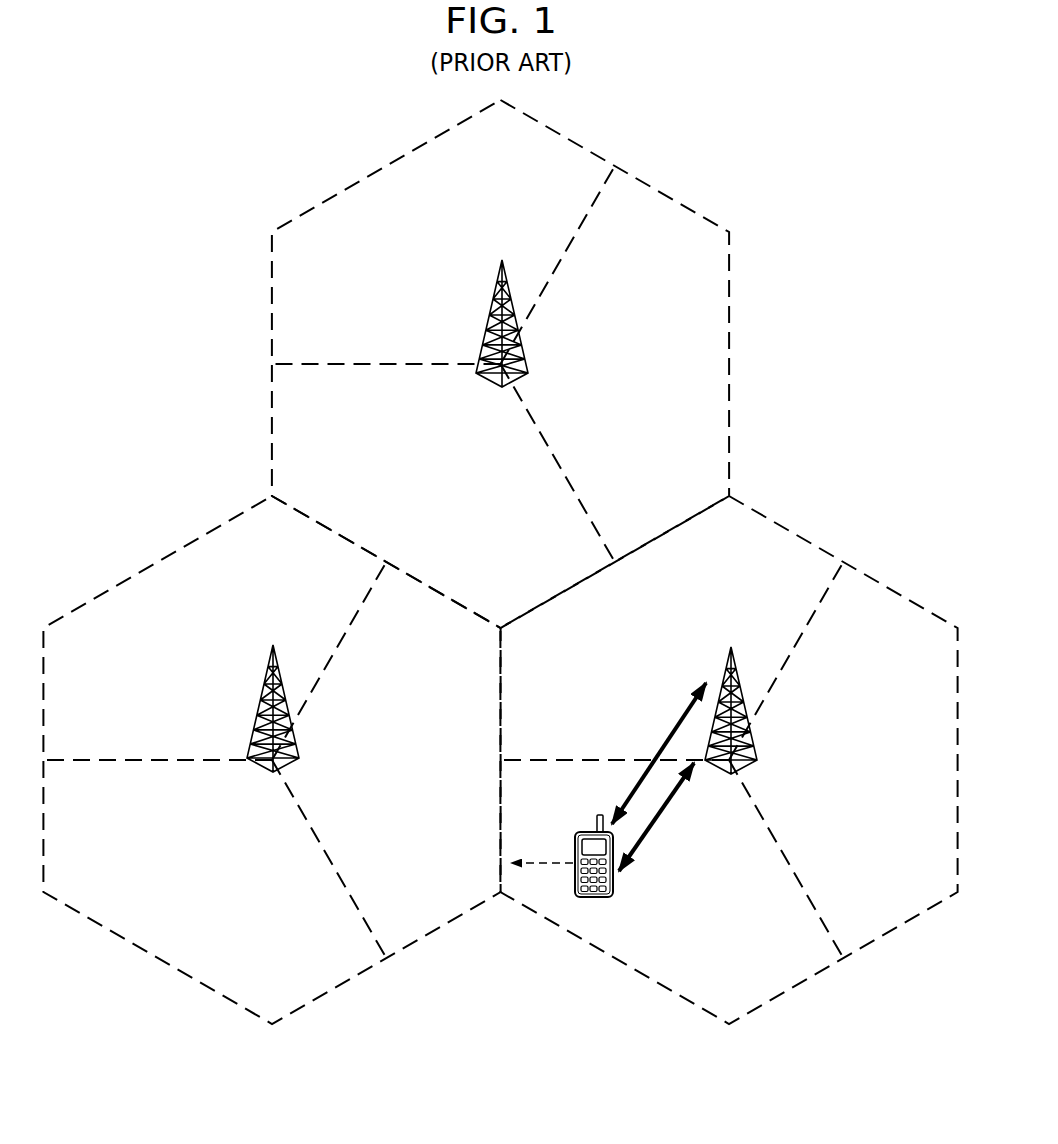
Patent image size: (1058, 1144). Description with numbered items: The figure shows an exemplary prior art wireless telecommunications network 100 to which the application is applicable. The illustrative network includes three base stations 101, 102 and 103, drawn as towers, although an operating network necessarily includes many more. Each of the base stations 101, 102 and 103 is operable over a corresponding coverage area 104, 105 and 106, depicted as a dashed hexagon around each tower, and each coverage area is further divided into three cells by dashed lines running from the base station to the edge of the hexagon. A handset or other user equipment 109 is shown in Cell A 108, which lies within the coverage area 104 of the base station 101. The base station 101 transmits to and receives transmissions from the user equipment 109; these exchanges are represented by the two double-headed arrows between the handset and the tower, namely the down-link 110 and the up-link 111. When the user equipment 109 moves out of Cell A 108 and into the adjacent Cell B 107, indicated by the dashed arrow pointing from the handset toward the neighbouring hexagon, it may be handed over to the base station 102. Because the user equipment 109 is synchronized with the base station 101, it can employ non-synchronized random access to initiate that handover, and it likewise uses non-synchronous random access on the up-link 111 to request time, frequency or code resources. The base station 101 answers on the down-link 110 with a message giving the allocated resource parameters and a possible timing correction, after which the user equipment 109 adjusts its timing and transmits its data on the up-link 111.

The wireless telecommunications network 100 is at (280, 115).
The base station 101 is at (755, 746).
The base station 102 is at (259, 710).
The base station 103 is at (487, 322).
The coverage area 104 is at (807, 980).
The coverage area 105 is at (170, 966).
The coverage area 106 is at (655, 187).
The Cell B 107 is at (434, 796).
The Cell A 108 is at (754, 966).
The user equipment 109 is at (591, 830).
The down-link 110 is at (649, 844).
The up-link 111 is at (677, 721).